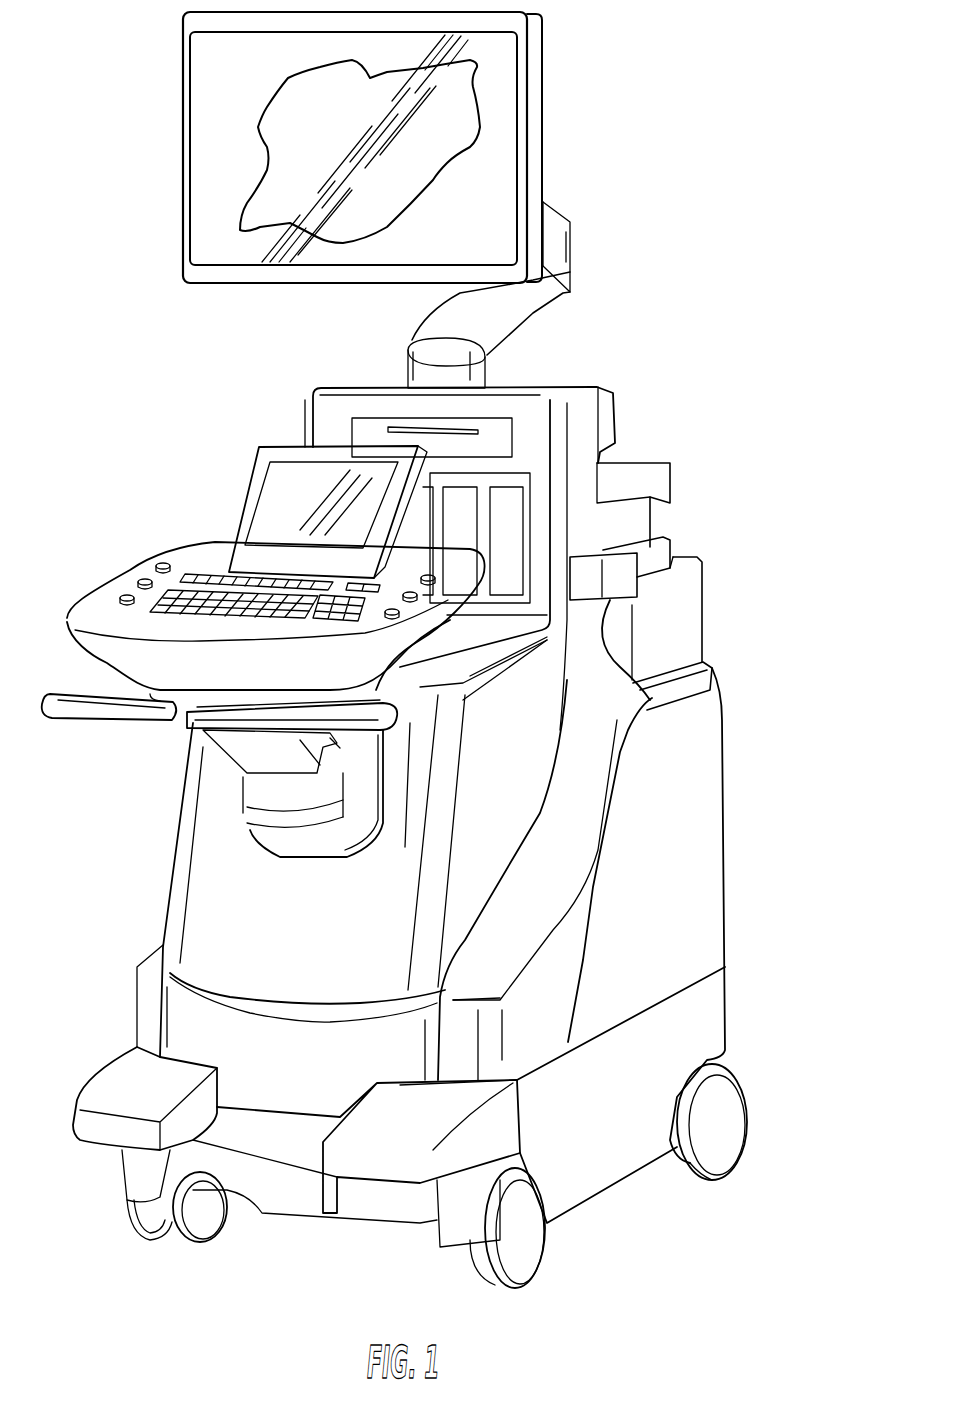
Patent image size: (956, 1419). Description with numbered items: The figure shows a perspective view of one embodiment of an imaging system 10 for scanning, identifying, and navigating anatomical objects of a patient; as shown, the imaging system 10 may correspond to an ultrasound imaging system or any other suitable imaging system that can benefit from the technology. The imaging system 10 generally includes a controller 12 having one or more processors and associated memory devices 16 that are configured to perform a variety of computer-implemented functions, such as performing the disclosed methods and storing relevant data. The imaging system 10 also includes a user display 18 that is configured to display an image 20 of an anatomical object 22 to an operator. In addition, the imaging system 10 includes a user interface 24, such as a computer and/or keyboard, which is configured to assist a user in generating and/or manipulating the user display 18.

The imaging system 10 is at (782, 246).
The controller 12 is at (212, 818).
The memory device 16 is at (528, 418).
The user display 18 is at (183, 87).
The image 20 is at (277, 142).
The anatomical object 22 is at (346, 125).
The user interface 24 is at (118, 563).